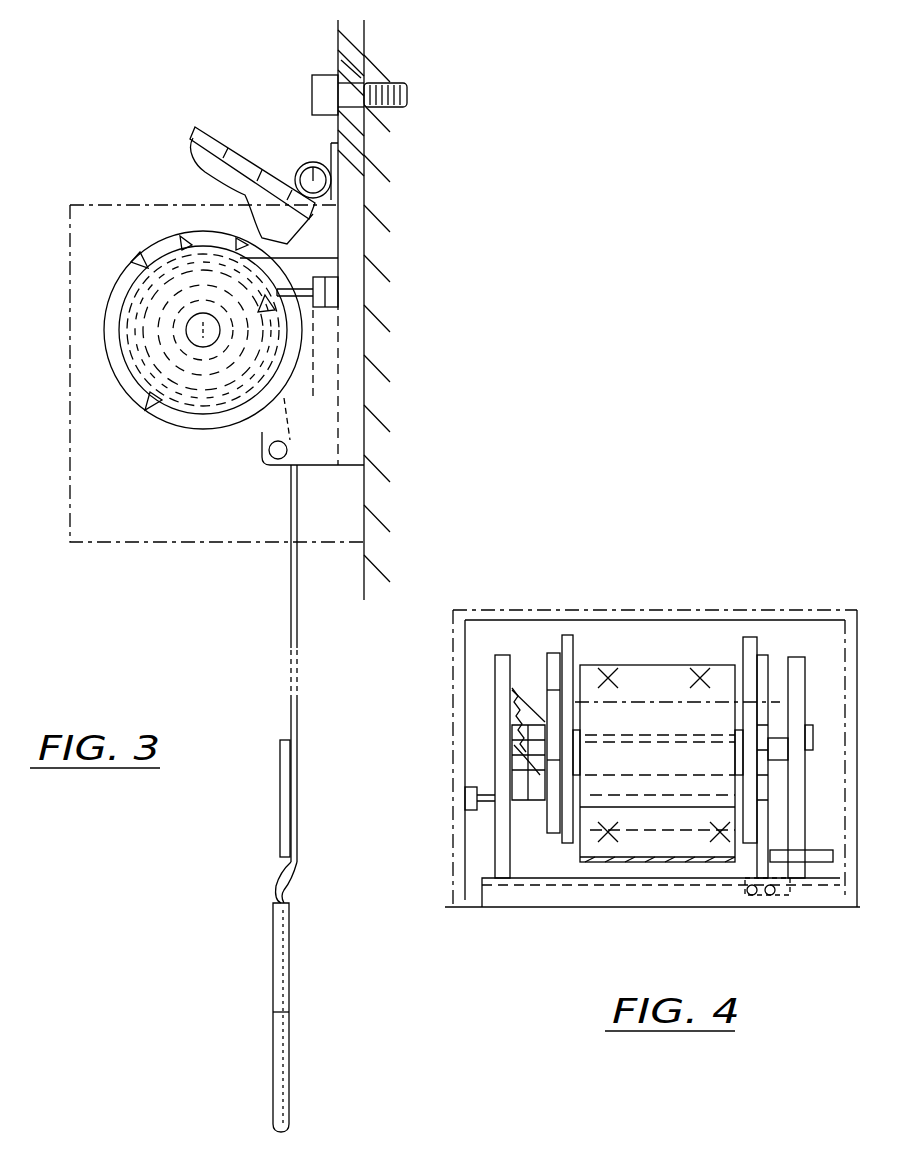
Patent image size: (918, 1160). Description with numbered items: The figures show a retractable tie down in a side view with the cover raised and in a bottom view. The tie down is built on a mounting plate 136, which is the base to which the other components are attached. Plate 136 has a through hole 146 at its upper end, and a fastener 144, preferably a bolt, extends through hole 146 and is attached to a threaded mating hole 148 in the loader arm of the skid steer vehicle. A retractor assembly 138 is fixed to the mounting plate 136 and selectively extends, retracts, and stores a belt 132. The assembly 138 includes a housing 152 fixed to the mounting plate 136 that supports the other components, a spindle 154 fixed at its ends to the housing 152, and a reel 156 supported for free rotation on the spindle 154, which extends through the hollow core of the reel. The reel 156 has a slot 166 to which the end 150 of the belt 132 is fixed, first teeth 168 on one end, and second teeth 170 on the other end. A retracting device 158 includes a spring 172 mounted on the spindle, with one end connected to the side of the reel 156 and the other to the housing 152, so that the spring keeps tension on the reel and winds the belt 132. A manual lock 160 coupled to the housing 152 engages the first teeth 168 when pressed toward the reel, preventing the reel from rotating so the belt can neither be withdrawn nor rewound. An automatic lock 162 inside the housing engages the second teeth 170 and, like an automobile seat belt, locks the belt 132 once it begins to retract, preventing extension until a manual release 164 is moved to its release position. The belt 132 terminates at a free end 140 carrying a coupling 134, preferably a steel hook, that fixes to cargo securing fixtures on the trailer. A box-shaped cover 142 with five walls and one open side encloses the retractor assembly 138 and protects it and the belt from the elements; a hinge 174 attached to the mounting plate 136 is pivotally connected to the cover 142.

In FIG. 3, the retractable belt 132 is at (289, 695).
In FIG. 4, the retractable belt 132 is at (700, 664).
In FIG. 3, the coupling 134 is at (273, 1067).
In FIG. 3, the mounting plate 136 is at (335, 62).
In FIG. 4, the mounting plate 136 is at (487, 906).
In FIG. 3, the retractor assembly 138 is at (350, 322).
In FIG. 4, the retractor assembly 138 is at (584, 605).
In FIG. 3, the free end 140 is at (280, 857).
In FIG. 3, the cover 142 is at (205, 125).
In FIG. 3, the fastener 144 is at (311, 91).
In FIG. 3, the through hole 146 is at (352, 80).
In FIG. 3, the threaded mating hole 148 is at (392, 88).
In FIG. 3, the end of belt 150 is at (150, 408).
In FIG. 3, the housing 152 is at (330, 258).
In FIG. 4, the housing 152 is at (502, 652).
In FIG. 3, the spindle 154 is at (168, 344).
In FIG. 3, the reel 156 is at (160, 242).
In FIG. 4, the reel 156 is at (575, 645).
In FIG. 4, the retracting device 158 is at (533, 668).
In FIG. 4, the manual lock 160 is at (470, 808).
In FIG. 4, the automatic lock 162 is at (780, 908).
In FIG. 4, the manual release 164 is at (800, 872).
In FIG. 3, the slot 166 is at (134, 264).
In FIG. 4, the first teeth 168 is at (552, 652).
In FIG. 3, the second teeth 170 is at (186, 330).
In FIG. 4, the second teeth 170 is at (757, 653).
In FIG. 4, the spring 172 is at (510, 688).
In FIG. 3, the hinge 174 is at (305, 166).
In FIG. 4, the hinge 174 is at (768, 710).